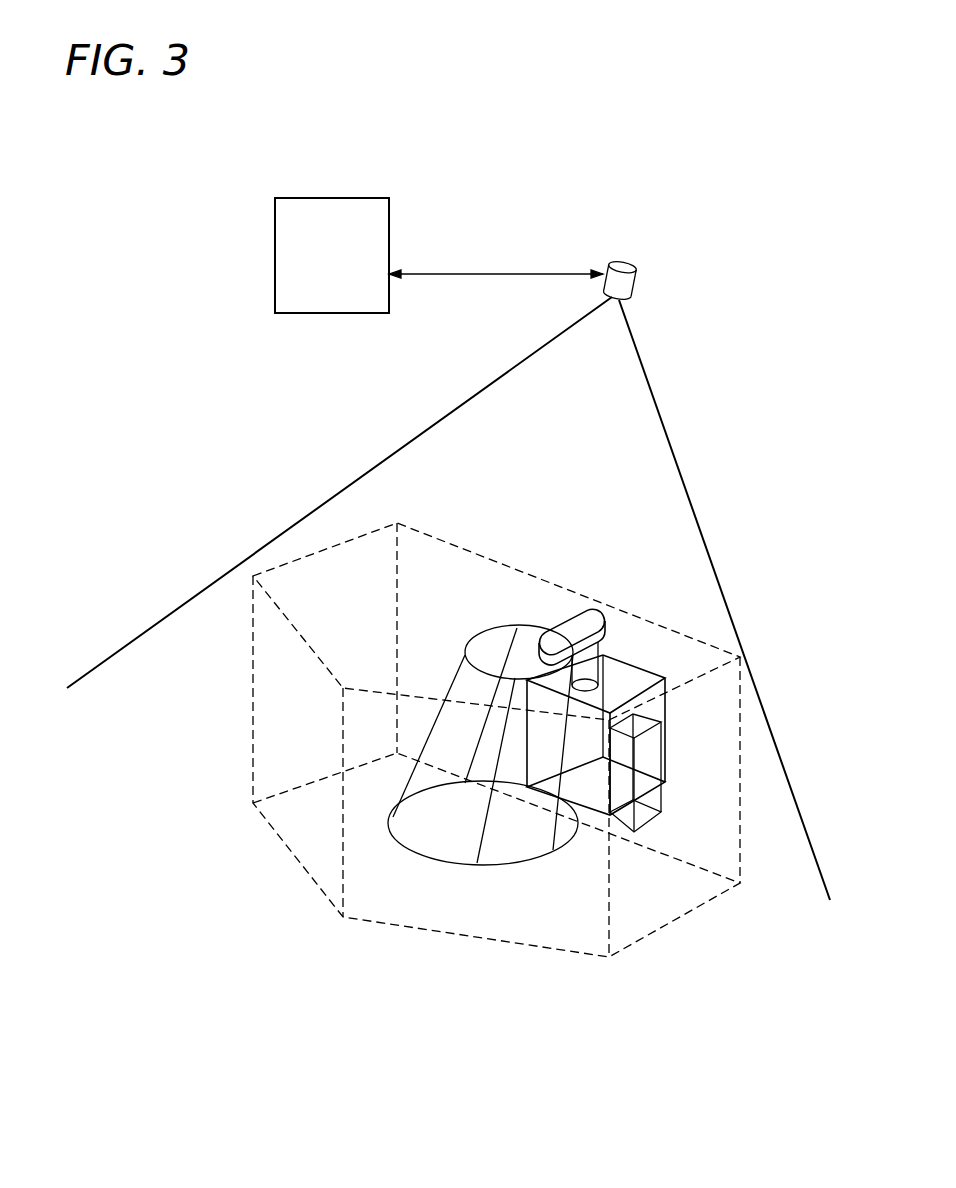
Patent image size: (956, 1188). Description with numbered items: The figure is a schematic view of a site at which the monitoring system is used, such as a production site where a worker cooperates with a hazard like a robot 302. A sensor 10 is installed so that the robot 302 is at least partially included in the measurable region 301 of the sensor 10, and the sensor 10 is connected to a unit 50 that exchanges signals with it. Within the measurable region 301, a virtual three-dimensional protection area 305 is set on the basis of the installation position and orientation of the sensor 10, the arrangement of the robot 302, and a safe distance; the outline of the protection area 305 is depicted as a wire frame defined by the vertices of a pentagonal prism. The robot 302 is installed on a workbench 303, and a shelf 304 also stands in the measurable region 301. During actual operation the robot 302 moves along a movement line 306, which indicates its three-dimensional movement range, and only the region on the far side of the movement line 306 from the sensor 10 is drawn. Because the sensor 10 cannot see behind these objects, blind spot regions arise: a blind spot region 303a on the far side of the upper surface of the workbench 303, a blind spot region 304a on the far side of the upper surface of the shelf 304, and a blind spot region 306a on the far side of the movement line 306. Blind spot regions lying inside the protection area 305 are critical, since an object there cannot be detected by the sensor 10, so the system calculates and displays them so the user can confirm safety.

The control device 50 is at (347, 198).
The sensor 10 is at (629, 263).
The measurable region 301 is at (155, 634).
The protection area 305 is at (307, 558).
The movement line 306 is at (483, 747).
The blind spot region 306a is at (455, 812).
The robot 302 is at (583, 617).
The workbench 303 is at (546, 695).
The blind spot region 303a is at (523, 743).
The shelf 304 is at (718, 854).
The blind spot region 304a is at (655, 800).